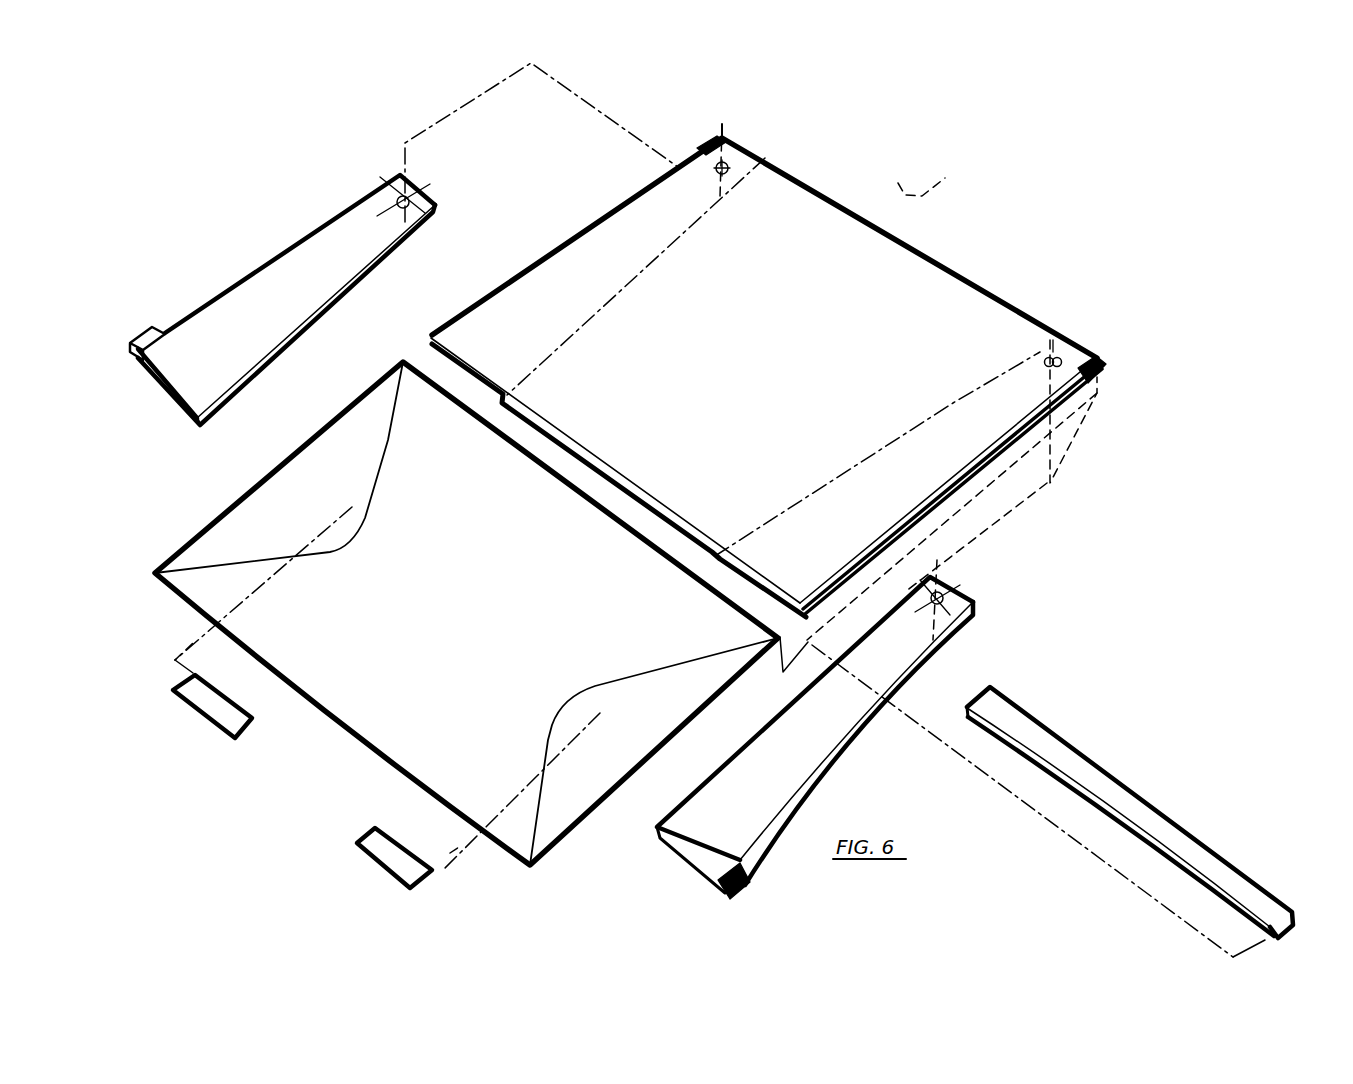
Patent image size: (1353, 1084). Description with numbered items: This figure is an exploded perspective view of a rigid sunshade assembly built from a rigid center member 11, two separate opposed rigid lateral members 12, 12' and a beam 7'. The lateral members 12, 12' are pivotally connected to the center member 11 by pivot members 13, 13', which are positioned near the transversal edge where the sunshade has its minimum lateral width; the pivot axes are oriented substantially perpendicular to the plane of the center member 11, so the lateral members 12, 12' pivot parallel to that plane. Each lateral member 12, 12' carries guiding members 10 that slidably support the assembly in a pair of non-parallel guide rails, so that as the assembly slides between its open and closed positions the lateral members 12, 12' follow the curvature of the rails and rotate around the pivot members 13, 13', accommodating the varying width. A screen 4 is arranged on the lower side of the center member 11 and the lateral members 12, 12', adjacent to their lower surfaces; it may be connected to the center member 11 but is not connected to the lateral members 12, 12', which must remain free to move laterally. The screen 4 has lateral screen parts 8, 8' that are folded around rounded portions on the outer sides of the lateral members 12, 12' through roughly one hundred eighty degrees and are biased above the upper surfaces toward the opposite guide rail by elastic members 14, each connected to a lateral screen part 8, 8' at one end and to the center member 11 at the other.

The screen 4 is at (466, 613).
The beam 7' is at (1130, 812).
The lateral screen part 8 is at (654, 764).
The lateral screen part 8' is at (279, 467).
The guiding member 10 is at (712, 140).
The center member 11 is at (890, 285).
The lateral member 12 is at (815, 735).
The lateral member 12' is at (286, 300).
The pivot member 13 is at (1104, 320).
The pivot member 13' is at (755, 132).
The elastic member 14 is at (228, 719).